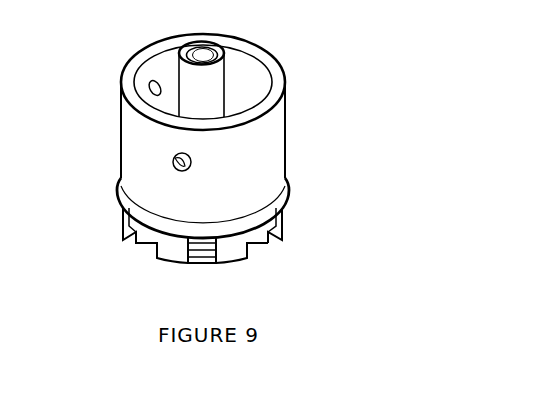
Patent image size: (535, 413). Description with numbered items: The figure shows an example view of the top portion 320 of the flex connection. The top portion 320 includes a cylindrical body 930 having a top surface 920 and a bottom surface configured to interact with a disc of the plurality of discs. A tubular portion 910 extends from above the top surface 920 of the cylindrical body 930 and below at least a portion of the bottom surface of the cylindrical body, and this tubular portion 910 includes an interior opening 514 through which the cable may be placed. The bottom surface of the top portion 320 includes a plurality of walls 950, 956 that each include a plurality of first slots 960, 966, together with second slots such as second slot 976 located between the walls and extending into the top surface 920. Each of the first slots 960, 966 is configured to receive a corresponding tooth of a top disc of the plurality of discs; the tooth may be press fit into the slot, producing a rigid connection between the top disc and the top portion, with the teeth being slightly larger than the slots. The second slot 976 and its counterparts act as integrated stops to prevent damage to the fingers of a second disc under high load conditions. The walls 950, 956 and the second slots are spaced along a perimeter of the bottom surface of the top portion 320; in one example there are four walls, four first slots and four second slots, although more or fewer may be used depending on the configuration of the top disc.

The top portion 320 is at (92, 16).
The interior opening 514 is at (180, 45).
The tubular portion 910 is at (178, 72).
The top surface 920 is at (253, 45).
The cylindrical body 930 is at (121, 120).
The wall 950 is at (118, 223).
The wall 956 is at (283, 218).
The first slot 960 is at (150, 243).
The first slot 966 is at (253, 247).
The second slot 976 is at (202, 260).